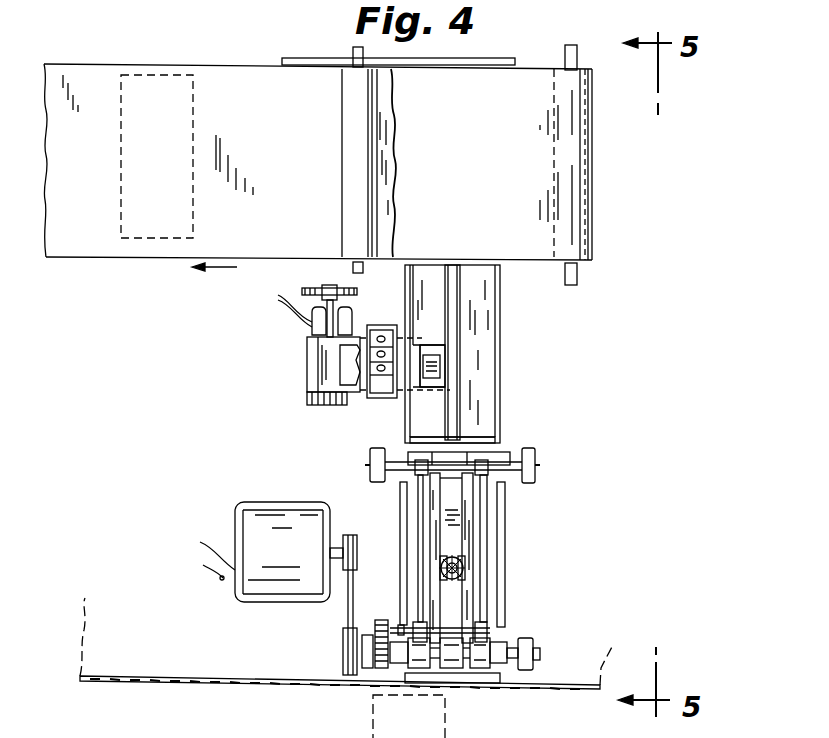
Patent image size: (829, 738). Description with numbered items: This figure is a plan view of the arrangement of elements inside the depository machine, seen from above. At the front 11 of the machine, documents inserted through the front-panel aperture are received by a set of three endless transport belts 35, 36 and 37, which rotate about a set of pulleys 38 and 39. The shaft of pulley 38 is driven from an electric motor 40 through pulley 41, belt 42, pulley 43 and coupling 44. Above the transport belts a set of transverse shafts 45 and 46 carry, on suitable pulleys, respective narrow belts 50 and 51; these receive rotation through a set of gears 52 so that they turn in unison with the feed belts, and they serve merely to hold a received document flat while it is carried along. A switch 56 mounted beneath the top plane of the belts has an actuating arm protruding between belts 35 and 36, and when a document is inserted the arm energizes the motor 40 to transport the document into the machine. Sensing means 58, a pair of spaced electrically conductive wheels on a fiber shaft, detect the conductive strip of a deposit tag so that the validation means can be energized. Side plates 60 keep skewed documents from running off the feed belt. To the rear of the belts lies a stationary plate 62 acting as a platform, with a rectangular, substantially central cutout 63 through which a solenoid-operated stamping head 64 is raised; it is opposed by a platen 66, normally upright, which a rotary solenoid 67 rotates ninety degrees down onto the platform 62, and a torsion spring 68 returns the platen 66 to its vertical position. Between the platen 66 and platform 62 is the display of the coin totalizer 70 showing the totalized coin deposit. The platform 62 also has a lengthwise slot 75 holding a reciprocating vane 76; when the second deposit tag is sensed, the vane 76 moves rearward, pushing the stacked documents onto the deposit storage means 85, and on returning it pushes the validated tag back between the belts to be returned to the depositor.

The deposit storage means 85 is at (292, 171).
The stationary plate 62 is at (480, 347).
The lengthwise slot 75 is at (462, 302).
The vane 76 is at (487, 437).
The cutout 63 is at (436, 342).
The stamping head 64 is at (432, 378).
The coin totalizer 70 is at (385, 325).
The rotary solenoid 67 is at (312, 328).
The platen 66 is at (307, 363).
The torsion spring 68 is at (307, 398).
The transverse shaft 46 is at (397, 452).
The pulley 39 is at (512, 482).
The side plates 60 is at (400, 515).
The belt 50 is at (418, 500).
The belt 51 is at (485, 508).
The sensing means 58 is at (455, 557).
The switch 56 is at (435, 625).
The transverse shaft 45 is at (398, 625).
The endless transport belt 35 is at (427, 670).
The endless transport belt 36 is at (455, 670).
The endless transport belt 37 is at (480, 670).
The pulley 38 is at (505, 640).
The gears 52 is at (383, 670).
The coupling 44 is at (368, 670).
The pulley 43 is at (343, 643).
The belt 42 is at (348, 598).
The pulley 41 is at (357, 546).
The electric motor 40 is at (297, 555).
The front 11 is at (200, 676).